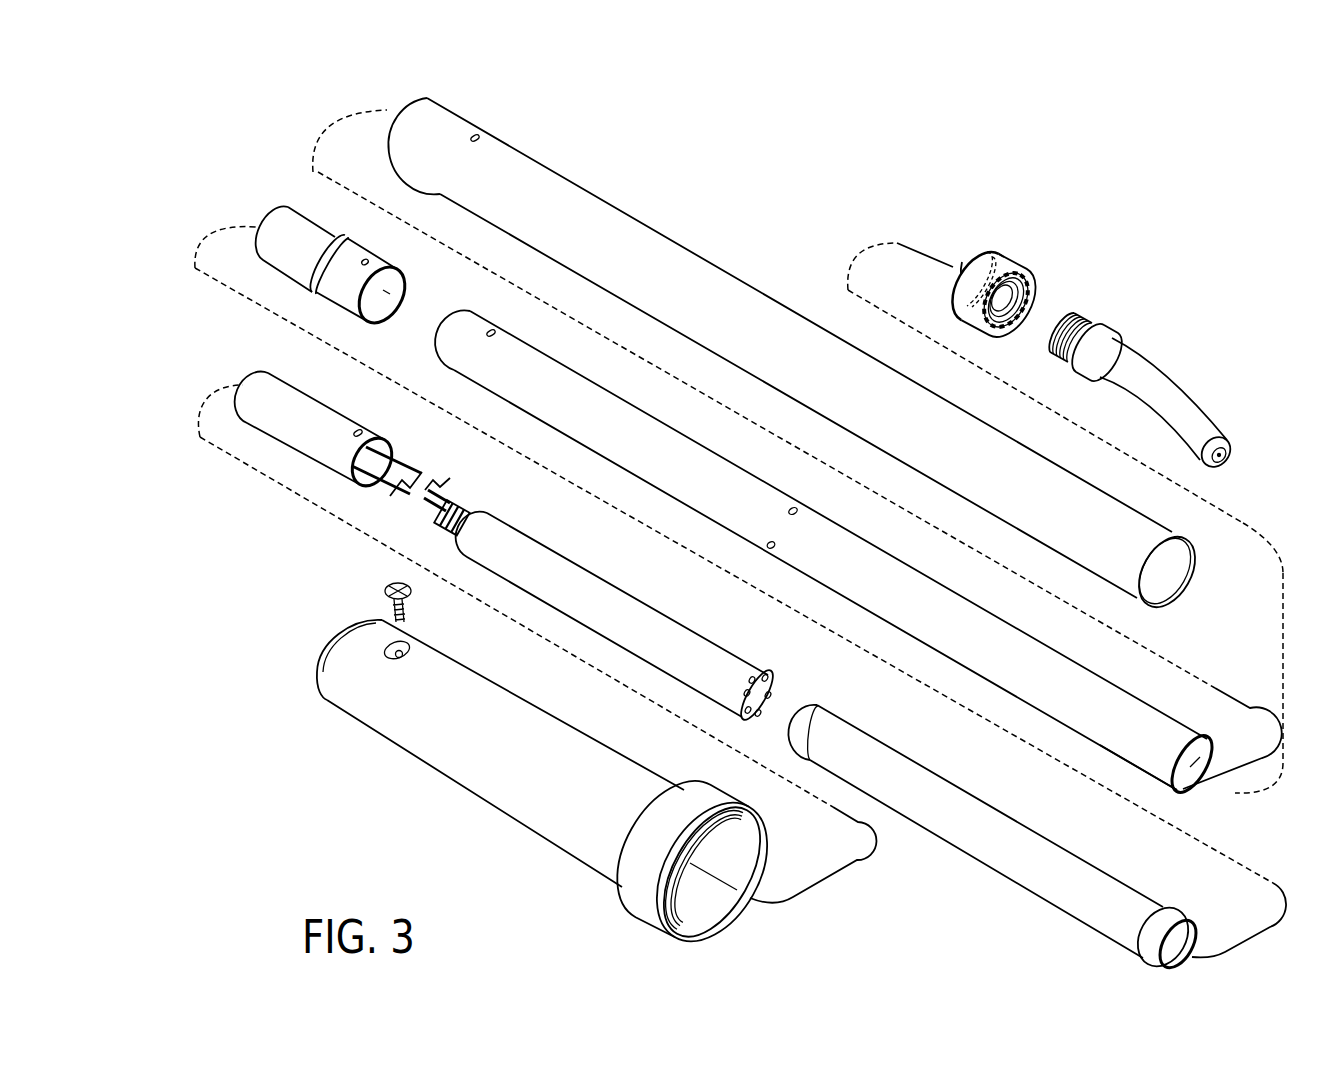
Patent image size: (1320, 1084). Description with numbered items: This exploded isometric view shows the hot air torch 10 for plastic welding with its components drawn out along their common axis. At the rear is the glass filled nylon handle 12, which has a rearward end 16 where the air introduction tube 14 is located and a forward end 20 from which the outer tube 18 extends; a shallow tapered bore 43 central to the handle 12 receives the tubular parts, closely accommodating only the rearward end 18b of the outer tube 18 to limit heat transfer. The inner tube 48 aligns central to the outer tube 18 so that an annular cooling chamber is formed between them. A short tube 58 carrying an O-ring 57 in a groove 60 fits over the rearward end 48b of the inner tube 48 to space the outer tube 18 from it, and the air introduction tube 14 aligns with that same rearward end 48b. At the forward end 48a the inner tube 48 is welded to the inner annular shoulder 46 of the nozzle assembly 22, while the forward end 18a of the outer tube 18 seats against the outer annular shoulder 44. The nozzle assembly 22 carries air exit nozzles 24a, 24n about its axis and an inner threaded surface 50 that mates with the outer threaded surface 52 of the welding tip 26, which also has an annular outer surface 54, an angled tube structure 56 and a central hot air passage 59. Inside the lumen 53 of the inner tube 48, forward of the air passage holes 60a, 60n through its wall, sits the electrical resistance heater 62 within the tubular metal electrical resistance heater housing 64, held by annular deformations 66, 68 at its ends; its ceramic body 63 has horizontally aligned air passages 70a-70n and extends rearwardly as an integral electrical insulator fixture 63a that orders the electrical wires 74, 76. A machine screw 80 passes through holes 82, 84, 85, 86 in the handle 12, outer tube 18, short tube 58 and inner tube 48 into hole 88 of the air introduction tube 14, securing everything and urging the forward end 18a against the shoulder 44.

The torch 10 is at (1140, 162).
The handle 12 is at (519, 757).
The air introduction tube 14 is at (246, 378).
The rearward end 16 is at (338, 662).
The outer tube 18 is at (750, 321).
The forward end 18a is at (1125, 587).
The rearward end 18b is at (418, 115).
The forward end 20 is at (653, 917).
The nozzle assembly 22 is at (1017, 250).
The air exit nozzle 24a is at (1020, 277).
The air exit nozzle 24n is at (997, 327).
The welding tip 26 is at (1167, 370).
The tapered bore 43 is at (685, 873).
The outer annular shoulder 44 is at (957, 257).
The inner annular shoulder 46 is at (947, 260).
The inner tube 48 is at (921, 606).
The forward end 48a is at (1157, 772).
The rearward end 48b is at (474, 310).
The inner threaded surface 50 is at (1010, 290).
The outer threaded surface 52 is at (1078, 313).
The lumen 53 is at (1201, 753).
The annular outer surface 54 is at (1101, 327).
The angled tube structure 56 is at (1193, 405).
The O-ring 57 is at (303, 210).
The short tube 58 is at (277, 237).
The central hot air passage 59 is at (1222, 452).
The groove 60 is at (317, 265).
The air passage hole 60a is at (798, 509).
The air passage hole 60n is at (773, 550).
The electrical resistance heater 62 is at (640, 603).
The ceramic body 63 is at (573, 577).
The integral electrical insulator fixture 63a is at (472, 510).
The tubular metal electrical resistance heater housing 64 is at (1003, 808).
The annular deformation 66 is at (1153, 910).
The annular deformation 68 is at (823, 722).
The horizontally aligned air passages 70a-70n is at (775, 680).
The electrical wire 74 is at (395, 470).
The electrical wire 76 is at (440, 520).
The machine screw 80 is at (386, 585).
The hole 82 is at (410, 654).
The hole 84 is at (480, 138).
The hole 85 is at (347, 238).
The hole 86 is at (495, 333).
The hole 88 is at (363, 433).